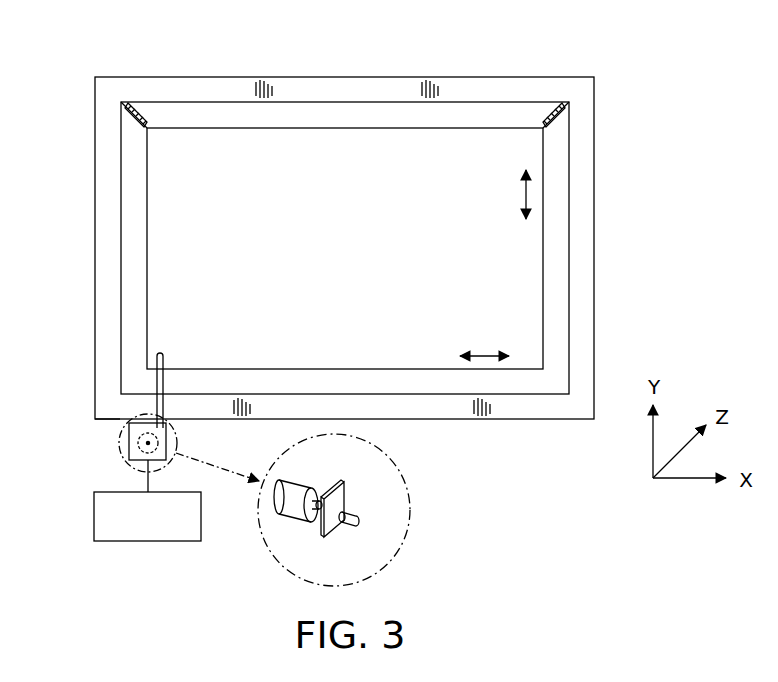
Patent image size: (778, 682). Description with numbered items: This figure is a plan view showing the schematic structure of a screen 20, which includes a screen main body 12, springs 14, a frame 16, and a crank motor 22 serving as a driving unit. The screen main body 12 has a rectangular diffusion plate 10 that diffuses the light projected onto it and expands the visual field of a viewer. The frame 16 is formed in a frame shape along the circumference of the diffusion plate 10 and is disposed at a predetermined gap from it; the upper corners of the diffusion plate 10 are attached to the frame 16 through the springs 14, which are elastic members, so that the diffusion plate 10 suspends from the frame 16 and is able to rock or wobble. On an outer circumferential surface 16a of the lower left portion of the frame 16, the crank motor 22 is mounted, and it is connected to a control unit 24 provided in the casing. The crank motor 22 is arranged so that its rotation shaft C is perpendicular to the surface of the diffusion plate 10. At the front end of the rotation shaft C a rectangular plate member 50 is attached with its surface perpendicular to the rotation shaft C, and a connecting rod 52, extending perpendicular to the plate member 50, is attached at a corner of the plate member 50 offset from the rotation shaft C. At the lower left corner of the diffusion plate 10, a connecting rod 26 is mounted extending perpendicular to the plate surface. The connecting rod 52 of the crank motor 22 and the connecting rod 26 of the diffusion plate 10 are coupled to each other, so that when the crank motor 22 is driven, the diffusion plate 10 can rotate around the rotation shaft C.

The screen 20 is at (380, 74).
The frame 16 is at (586, 255).
The outer circumferential surface 16a is at (110, 420).
The diffusion plate 10 is at (325, 143).
The screen main body 12 is at (242, 126).
The springs 14 is at (124, 118).
The connecting rod 26 is at (157, 356).
The crank motor 22 is at (121, 456).
The control unit 24 is at (94, 512).
The plate member 50 is at (346, 498).
The connecting rod 52 is at (352, 515).
The rotation shaft C is at (319, 501).